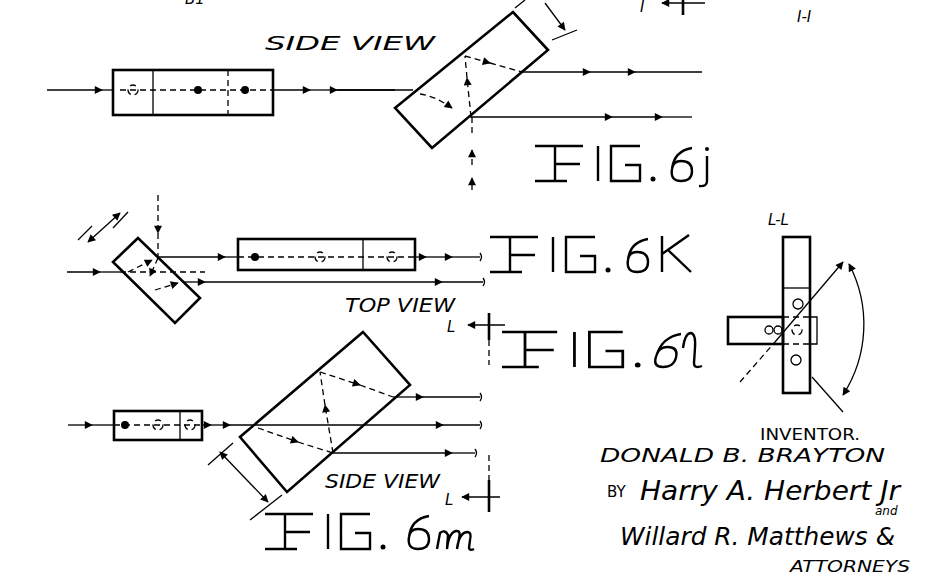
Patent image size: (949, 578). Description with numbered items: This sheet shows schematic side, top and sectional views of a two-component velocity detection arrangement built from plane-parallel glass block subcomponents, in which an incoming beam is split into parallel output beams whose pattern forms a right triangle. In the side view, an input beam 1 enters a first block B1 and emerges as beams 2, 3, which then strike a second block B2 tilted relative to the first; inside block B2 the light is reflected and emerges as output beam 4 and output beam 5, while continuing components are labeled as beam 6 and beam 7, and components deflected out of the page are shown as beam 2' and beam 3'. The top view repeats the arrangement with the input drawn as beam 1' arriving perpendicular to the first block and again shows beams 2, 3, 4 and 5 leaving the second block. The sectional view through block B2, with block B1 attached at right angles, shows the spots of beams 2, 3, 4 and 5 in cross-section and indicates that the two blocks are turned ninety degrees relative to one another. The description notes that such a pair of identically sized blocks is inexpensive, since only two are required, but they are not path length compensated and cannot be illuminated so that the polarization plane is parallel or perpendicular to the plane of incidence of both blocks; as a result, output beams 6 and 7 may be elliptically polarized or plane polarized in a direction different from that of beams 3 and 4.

In FIG. 6J, the incident light beam 1 is at (80, 77).
In FIG. 6K, the incident light beam 1 is at (136, 260).
In FIG. 6L, the incident light beam 1 is at (761, 359).
In FIG. 6M, the incident light beam 1 is at (91, 406).
In FIG. 6K, the incident light beam (top view) 1' is at (168, 226).
In FIG. 6J, the ordinary ray beam 2 is at (343, 75).
In FIG. 6K, the ordinary ray beam 2 is at (334, 283).
In FIG. 6L, the ordinary ray beam 2 is at (746, 349).
In FIG. 6M, the ordinary ray beam 2 is at (373, 416).
In FIG. 6J, the ordinary ray beam (deflected) 2' is at (483, 181).
In FIG. 6J, the output beam 3 is at (358, 75).
In FIG. 6K, the output beam 3 is at (198, 245).
In FIG. 6L, the output beam 3 is at (818, 340).
In FIG. 6M, the output beam 3 is at (233, 409).
In FIG. 6J, the extraordinary ray beam (deflected) 3' is at (483, 141).
In FIG. 6J, the output beam 4 is at (560, 57).
In FIG. 6K, the output beam 4 is at (424, 242).
In FIG. 6L, the output beam 4 is at (806, 304).
In FIG. 6M, the output beam 4 is at (437, 390).
In FIG. 6J, the output beam 5 is at (541, 104).
In FIG. 6K, the output beam 5 is at (454, 244).
In FIG. 6L, the output beam 5 is at (804, 360).
In FIG. 6M, the output beam 5 is at (405, 444).
In FIG. 6J, the output beam 6 is at (646, 57).
In FIG. 6J, the output beam 7 is at (652, 104).
In FIG. 6J, the first birefringent crystal B1 is at (190, 116).
In FIG. 6K, the first birefringent crystal B1 is at (143, 290).
In FIG. 6L, the first birefringent crystal B1 is at (732, 316).
In FIG. 6M, the first birefringent crystal B1 is at (140, 411).
In FIG. 6J, the second birefringent crystal B2 is at (440, 71).
In FIG. 6K, the second birefringent crystal B2 is at (312, 239).
In FIG. 6L, the second birefringent crystal B2 is at (812, 247).
In FIG. 6M, the second birefringent crystal B2 is at (398, 372).